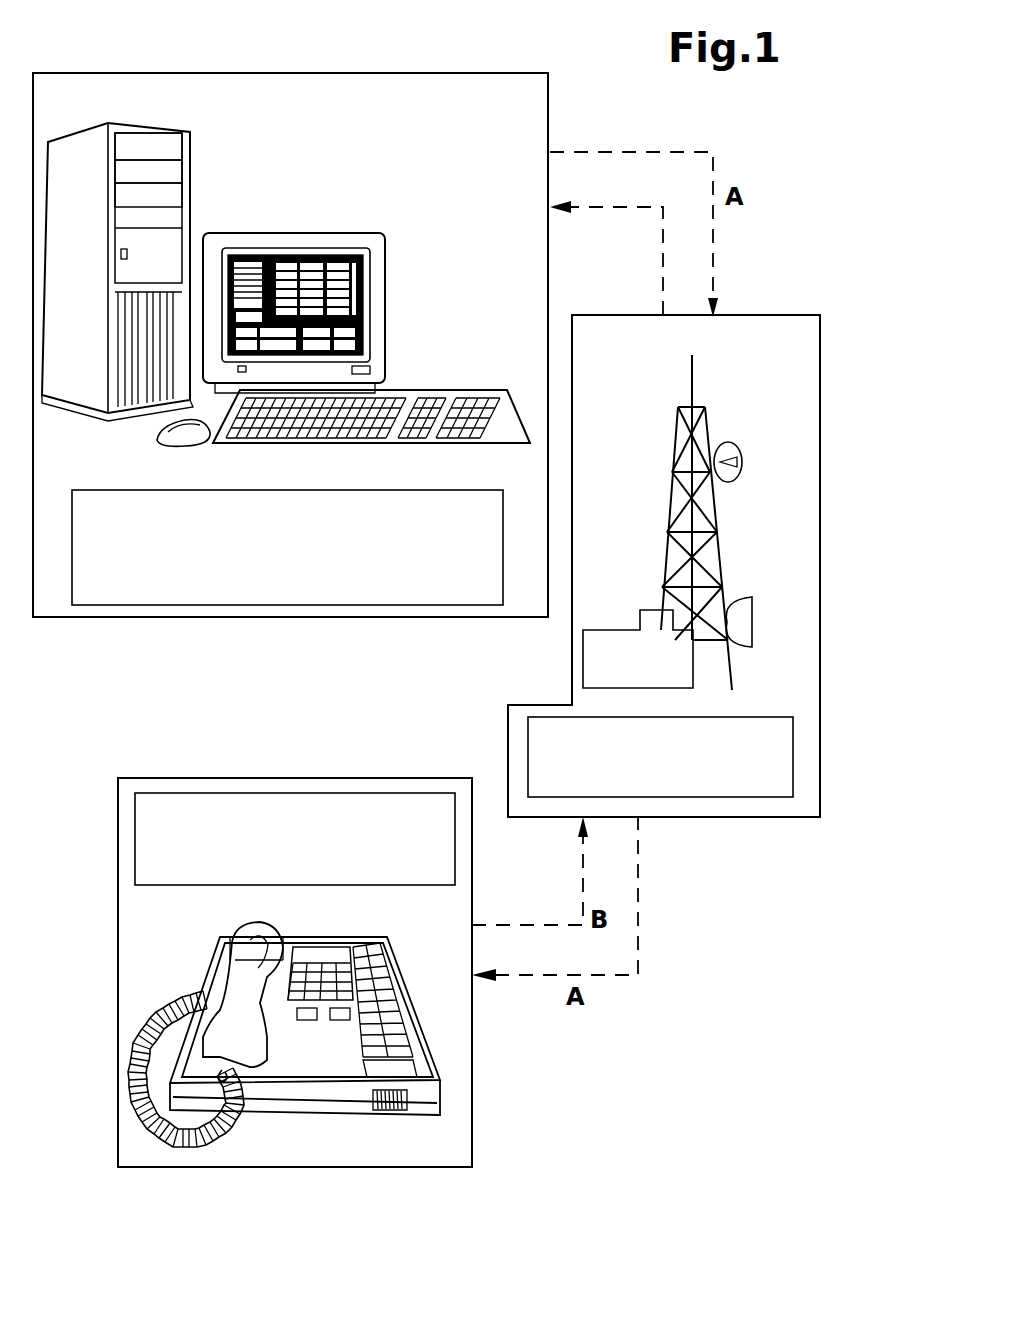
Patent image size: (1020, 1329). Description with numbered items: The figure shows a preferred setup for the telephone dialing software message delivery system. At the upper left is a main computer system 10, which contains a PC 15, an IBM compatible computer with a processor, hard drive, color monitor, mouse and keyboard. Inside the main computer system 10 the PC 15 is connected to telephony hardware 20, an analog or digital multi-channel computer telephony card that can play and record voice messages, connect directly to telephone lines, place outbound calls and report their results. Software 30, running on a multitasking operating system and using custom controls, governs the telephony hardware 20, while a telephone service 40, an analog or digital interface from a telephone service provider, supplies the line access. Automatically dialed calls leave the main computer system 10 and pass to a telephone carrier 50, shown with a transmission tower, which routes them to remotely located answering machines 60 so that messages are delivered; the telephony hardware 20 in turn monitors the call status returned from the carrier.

The main computer system 10 is at (82, 110).
The PC 15 is at (338, 304).
The telephony hardware 20 is at (202, 131).
The software 30 is at (202, 160).
The telephone service 40 is at (202, 198).
The telephone carrier 50 is at (803, 350).
The answering machines 60 is at (170, 946).